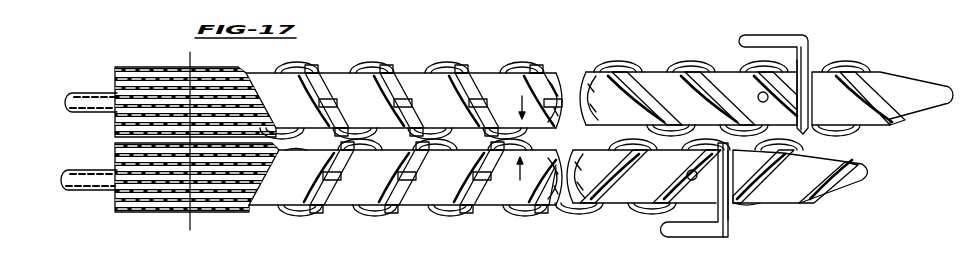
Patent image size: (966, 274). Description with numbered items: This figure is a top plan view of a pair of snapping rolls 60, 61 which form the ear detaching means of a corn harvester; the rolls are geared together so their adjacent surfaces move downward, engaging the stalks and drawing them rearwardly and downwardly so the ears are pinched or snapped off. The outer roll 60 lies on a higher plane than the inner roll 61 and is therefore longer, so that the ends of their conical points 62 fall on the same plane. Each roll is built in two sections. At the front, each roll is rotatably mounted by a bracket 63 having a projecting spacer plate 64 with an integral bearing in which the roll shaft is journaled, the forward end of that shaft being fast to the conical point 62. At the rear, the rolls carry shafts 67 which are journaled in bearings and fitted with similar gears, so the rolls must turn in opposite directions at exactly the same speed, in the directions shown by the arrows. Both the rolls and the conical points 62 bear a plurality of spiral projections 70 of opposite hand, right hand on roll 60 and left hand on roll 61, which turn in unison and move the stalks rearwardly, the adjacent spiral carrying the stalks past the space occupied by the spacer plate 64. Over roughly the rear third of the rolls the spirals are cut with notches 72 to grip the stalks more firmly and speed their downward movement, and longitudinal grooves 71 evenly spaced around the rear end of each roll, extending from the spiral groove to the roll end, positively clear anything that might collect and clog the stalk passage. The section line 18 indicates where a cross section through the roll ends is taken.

The section line 18- 18 is at (190, 52).
The outer snapping roll 60 is at (404, 100).
The inner snapping roll 61 is at (405, 177).
The conical point 62 is at (916, 103).
The bracket 63 is at (769, 39).
The spacer plate 64 is at (803, 131).
The shaft 67 is at (92, 86).
The spiral projections 70 is at (700, 65).
The longitudinal grooves 71 is at (145, 215).
The notches 72 is at (408, 105).